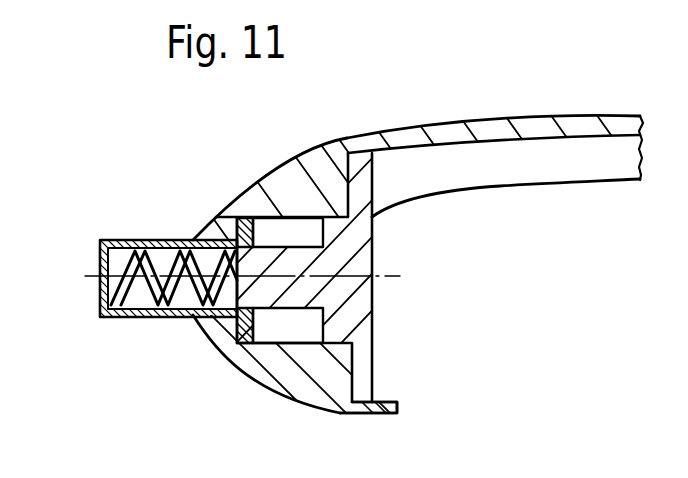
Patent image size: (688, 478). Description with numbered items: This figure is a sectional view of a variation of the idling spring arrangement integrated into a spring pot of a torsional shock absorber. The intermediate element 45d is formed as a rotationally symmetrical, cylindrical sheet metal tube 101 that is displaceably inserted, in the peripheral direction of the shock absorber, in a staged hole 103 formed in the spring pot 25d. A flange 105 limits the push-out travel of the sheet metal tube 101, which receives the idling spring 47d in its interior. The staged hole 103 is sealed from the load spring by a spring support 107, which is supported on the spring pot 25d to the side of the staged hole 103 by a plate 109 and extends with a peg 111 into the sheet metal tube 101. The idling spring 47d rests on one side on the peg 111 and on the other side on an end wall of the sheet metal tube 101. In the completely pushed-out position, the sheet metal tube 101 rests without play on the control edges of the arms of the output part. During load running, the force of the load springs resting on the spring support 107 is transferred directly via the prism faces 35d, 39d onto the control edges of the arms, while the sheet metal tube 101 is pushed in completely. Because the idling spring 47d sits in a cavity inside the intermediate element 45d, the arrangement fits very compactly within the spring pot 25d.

The intermediate element 45d is at (146, 158).
The spring pot 25d is at (335, 160).
The prism face 35d is at (278, 172).
The flange 105 is at (236, 216).
The sheet metal tube 101 is at (100, 291).
The idling spring 47d is at (152, 320).
The prism face 39d is at (212, 350).
The staged hole 103 is at (265, 340).
The peg 111 is at (293, 293).
The spring support 107 is at (338, 330).
The plate 109 is at (368, 392).